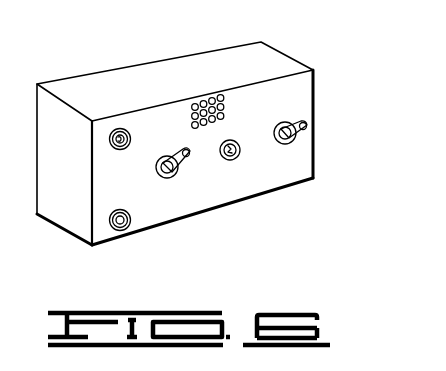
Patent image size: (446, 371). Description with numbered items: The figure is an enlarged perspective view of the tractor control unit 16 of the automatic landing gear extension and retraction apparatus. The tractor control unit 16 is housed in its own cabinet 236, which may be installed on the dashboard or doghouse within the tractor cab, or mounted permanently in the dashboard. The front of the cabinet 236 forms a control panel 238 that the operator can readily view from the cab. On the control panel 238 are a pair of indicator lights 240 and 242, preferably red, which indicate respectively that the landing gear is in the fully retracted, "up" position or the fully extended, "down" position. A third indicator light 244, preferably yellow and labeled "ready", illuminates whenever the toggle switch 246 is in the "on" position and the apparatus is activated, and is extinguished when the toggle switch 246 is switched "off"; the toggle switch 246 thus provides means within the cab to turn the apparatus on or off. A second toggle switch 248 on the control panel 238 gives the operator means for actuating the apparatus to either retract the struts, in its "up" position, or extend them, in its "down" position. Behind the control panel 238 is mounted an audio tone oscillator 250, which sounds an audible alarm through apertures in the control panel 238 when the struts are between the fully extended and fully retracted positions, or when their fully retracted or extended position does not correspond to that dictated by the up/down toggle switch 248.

The tractor control unit 16 is at (138, 78).
The cabinet 236 is at (275, 57).
The control panel 238 is at (301, 82).
The indicator light 240 is at (122, 126).
The indicator light 242 is at (124, 230).
The third indicator light 244 is at (236, 138).
The toggle switch 246 is at (190, 160).
The second toggle switch 248 is at (308, 119).
The audio tone oscillator 250 is at (220, 94).